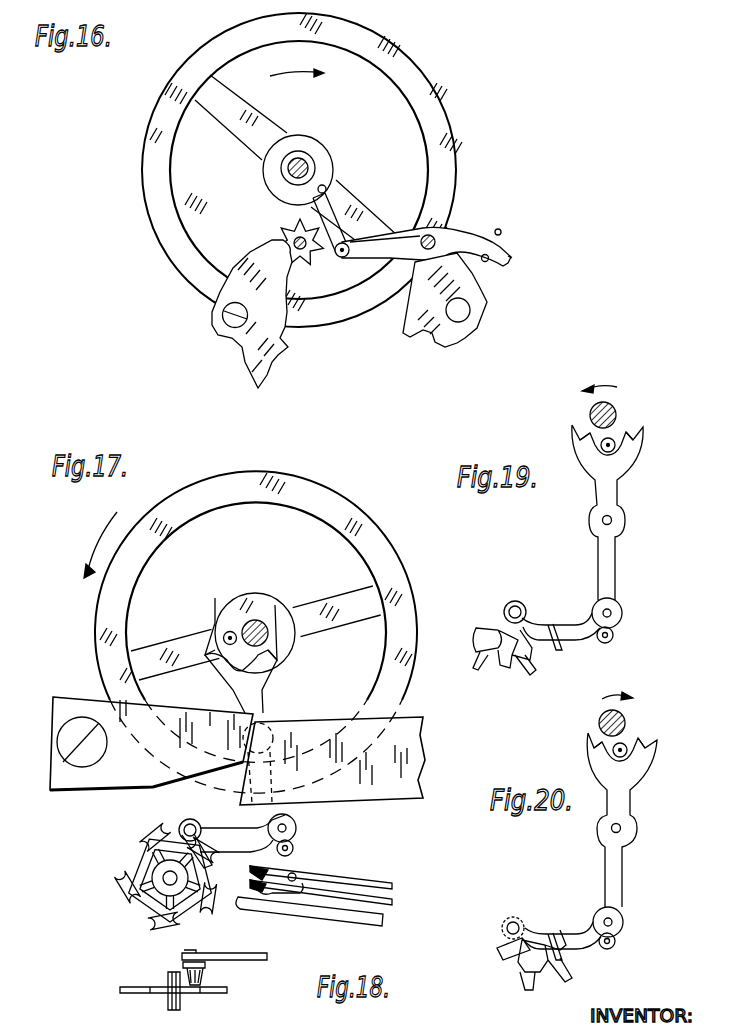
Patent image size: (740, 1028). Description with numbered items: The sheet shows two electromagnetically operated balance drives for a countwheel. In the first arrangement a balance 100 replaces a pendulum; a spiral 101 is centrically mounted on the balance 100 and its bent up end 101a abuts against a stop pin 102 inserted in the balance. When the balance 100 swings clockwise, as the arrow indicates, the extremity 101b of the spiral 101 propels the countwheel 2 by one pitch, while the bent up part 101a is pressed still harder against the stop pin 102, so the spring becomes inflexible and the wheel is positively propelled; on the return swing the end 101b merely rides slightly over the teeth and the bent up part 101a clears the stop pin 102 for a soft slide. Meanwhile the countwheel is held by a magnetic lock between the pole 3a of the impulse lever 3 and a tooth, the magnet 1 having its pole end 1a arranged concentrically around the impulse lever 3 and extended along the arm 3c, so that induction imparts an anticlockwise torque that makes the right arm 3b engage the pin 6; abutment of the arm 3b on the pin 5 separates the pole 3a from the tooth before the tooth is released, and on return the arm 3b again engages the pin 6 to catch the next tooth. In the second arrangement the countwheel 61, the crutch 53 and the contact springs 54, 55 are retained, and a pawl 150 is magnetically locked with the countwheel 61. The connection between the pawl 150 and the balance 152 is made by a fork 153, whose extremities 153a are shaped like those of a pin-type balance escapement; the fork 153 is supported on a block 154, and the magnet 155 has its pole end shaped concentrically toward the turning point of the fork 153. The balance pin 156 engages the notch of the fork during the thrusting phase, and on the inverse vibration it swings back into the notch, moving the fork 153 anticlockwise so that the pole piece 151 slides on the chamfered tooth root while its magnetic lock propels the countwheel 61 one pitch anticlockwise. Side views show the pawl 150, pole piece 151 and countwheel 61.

In FIG. 16, the balance 100 is at (409, 79).
In FIG. 16, the spiral 101 is at (322, 157).
In FIG. 16, the bent up end of the spiral 101a is at (328, 191).
In FIG. 16, the extremity of the spiral 101b is at (318, 202).
In FIG. 16, the stop pin 102 is at (326, 187).
In FIG. 16, the star wheel 2 is at (290, 232).
In FIG. 16, the impulse lever 3 is at (463, 235).
In FIG. 16, the pole piece 3a is at (341, 257).
In FIG. 16, the right arm of the impulse lever 3b is at (511, 253).
In FIG. 16, the arm of the impulse lever 3c is at (387, 249).
In FIG. 16, the pin 5 is at (489, 260).
In FIG. 16, the pin 6 is at (499, 229).
In FIG. 16, the magnet 1 is at (437, 335).
In FIG. 16, the pole end of the magnet 1a is at (443, 278).
In FIG. 17, the balance 152 is at (322, 494).
In FIG. 17, the fork 153 is at (249, 699).
In FIG. 19, the fork 153 is at (607, 493).
In FIG. 20, the fork 153 is at (617, 798).
In FIG. 17, the extremities of the fork 153a is at (268, 657).
In FIG. 19, the extremities of the fork 153a is at (626, 440).
In FIG. 20, the extremities of the fork 153a is at (645, 752).
In FIG. 17, the balance pin 156 is at (230, 631).
In FIG. 19, the balance pin 156 is at (606, 451).
In FIG. 20, the balance pin 156 is at (623, 745).
In FIG. 17, the block 154 is at (81, 773).
In FIG. 17, the magnet 155 is at (396, 765).
In FIG. 17, the pawl 150 is at (229, 845).
In FIG. 18, the pawl 150 is at (243, 955).
In FIG. 19, the pawl 150 is at (578, 629).
In FIG. 20, the pawl 150 is at (583, 938).
In FIG. 17, the pole piece 151 is at (186, 821).
In FIG. 18, the pole piece 151 is at (198, 971).
In FIG. 19, the pole piece 151 is at (514, 601).
In FIG. 20, the pole piece 151 is at (518, 918).
In FIG. 17, the countwheel 61 is at (150, 897).
In FIG. 18, the countwheel 61 is at (128, 992).
In FIG. 19, the countwheel 61 is at (497, 656).
In FIG. 20, the countwheel 61 is at (553, 973).
In FIG. 17, the crutch 53 is at (328, 915).
In FIG. 17, the contact spring 54 is at (335, 874).
In FIG. 17, the contact spring 55 is at (355, 893).